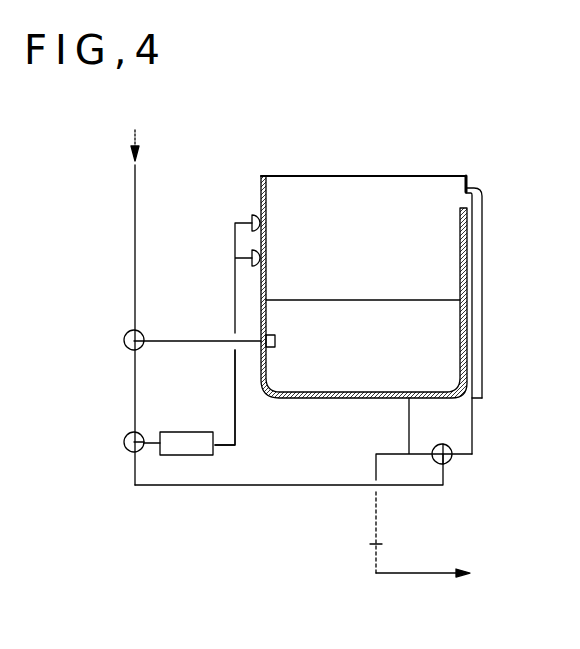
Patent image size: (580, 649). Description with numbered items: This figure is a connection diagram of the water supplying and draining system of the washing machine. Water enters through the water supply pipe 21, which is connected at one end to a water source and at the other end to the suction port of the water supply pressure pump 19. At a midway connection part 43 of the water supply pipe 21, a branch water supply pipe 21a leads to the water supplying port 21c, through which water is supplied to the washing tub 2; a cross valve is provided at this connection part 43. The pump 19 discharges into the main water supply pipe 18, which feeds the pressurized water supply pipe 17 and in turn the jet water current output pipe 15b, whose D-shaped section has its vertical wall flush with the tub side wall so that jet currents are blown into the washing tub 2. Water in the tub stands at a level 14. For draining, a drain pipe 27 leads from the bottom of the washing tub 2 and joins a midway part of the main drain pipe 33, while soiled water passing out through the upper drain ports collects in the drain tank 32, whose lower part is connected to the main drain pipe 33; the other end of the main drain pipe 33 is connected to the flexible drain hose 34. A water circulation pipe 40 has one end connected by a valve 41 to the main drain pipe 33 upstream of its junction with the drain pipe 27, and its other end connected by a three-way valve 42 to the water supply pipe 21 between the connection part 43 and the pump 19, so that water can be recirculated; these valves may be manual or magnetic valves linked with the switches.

The washing tub 2 is at (333, 400).
The liquid level 14 is at (345, 300).
The jet water current output pipe 15b is at (249, 215).
The pressurized water supply pipe 17 is at (237, 222).
The main water supply pipe 18 is at (238, 420).
The water supply pressure pump 19 is at (188, 440).
The water supply pipe 21 is at (136, 215).
The branch water supply pipe 21a is at (201, 335).
The water supplying port 21c is at (276, 341).
The drain pipe 27 is at (405, 430).
The drain tank 32 is at (483, 272).
The main drain pipe 33 is at (378, 515).
The flexible drain hose 34 is at (418, 578).
The water circulation pipe 40 is at (258, 488).
The valve 41 is at (446, 462).
The three-way valve 42 is at (123, 452).
The connection part 43 is at (124, 347).